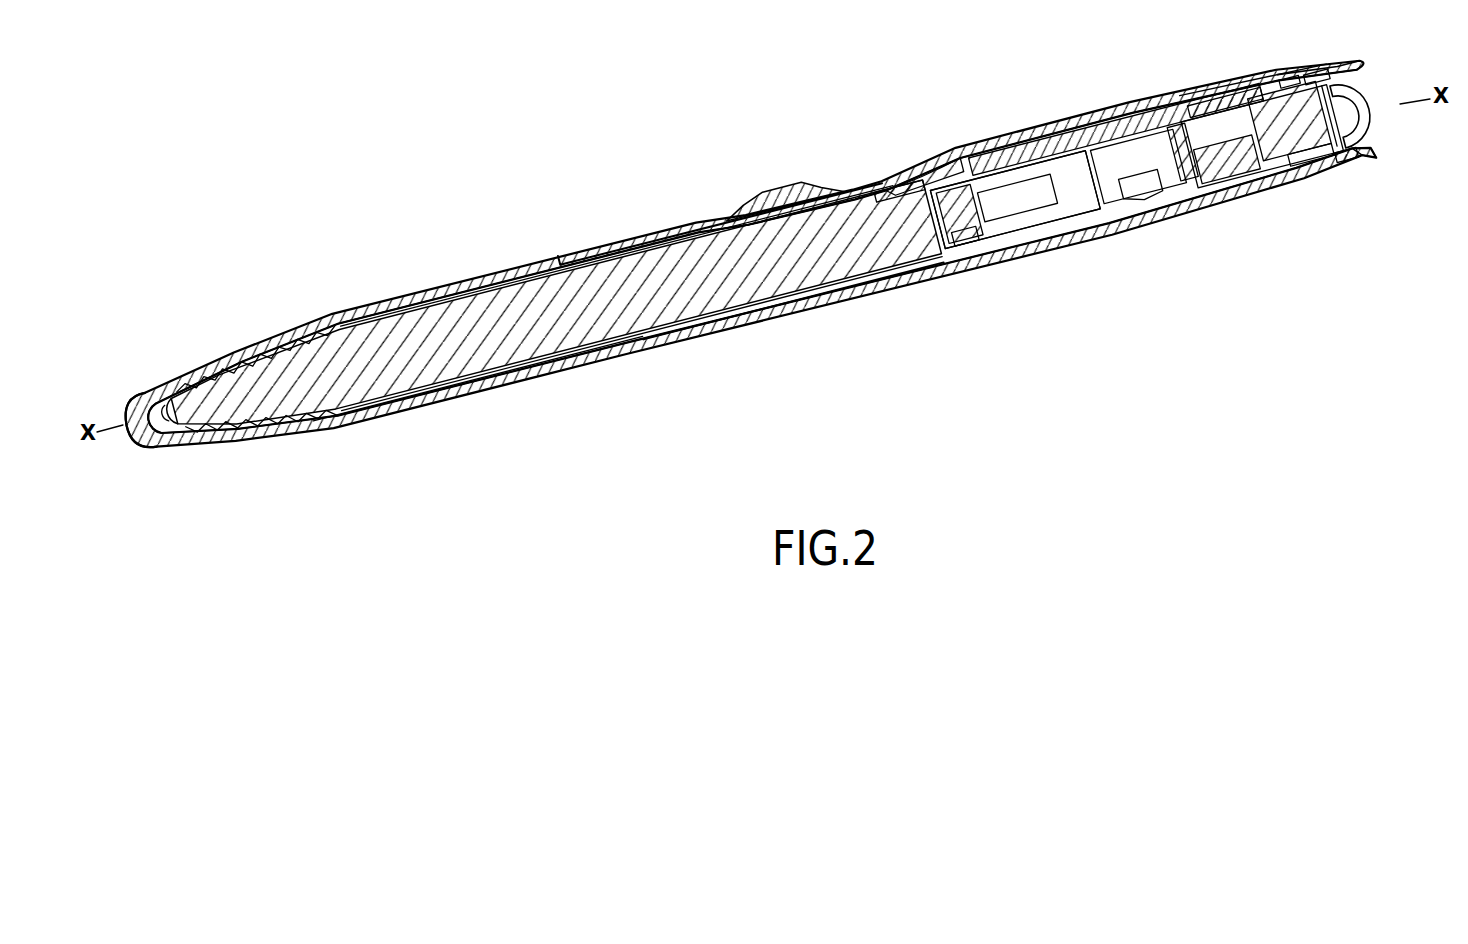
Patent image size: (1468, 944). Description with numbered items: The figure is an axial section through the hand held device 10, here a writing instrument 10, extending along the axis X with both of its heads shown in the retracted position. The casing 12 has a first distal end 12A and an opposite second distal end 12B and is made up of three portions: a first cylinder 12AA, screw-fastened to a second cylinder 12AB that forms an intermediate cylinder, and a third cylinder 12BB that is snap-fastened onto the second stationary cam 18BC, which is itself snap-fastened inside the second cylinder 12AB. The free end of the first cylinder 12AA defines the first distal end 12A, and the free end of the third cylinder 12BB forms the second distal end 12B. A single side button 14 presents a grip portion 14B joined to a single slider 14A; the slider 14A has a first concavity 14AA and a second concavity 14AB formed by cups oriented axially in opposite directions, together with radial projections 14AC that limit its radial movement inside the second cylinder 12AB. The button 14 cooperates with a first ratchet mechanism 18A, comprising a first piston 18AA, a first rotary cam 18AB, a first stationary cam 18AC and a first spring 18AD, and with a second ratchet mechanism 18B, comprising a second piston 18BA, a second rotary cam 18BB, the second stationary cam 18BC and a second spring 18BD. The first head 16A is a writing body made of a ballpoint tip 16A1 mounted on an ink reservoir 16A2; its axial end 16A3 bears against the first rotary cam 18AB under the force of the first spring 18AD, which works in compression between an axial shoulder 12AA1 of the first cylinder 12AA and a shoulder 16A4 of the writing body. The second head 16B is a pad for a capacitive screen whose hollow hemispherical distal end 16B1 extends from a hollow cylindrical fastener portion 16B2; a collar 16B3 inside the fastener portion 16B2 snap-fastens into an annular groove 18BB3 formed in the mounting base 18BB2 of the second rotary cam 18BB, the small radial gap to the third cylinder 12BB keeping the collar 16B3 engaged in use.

The hand held device 10 is at (524, 124).
The casing 12 is at (580, 257).
The first distal end 12A is at (137, 393).
The first cylinder 12AA is at (380, 307).
The axial shoulder 12AA1 is at (187, 380).
The second cylinder 12AB is at (953, 132).
The second distal end 12B is at (1360, 70).
The third cylinder 12BB is at (1287, 80).
The side button 14 is at (764, 180).
The slider 14A is at (1085, 150).
The first concavity 14AA is at (1087, 222).
The second concavity 14AB is at (1133, 217).
The radial projections 14AC is at (1100, 220).
The grip portion 14B is at (828, 190).
The first head 16A is at (442, 334).
The ballpoint tip 16A1 is at (167, 443).
The ink reservoir 16A2 is at (500, 330).
The axial end 16A3 is at (905, 180).
The shoulder 16A4 is at (305, 336).
The second head 16B is at (1372, 122).
The distal end 16B1 is at (1364, 93).
The fastener portion 16B2 is at (1317, 80).
The collar 16B3 is at (1243, 100).
The first ratchet mechanism 18A is at (1040, 300).
The first piston 18AA is at (1017, 248).
The first rotary cam 18AB is at (967, 243).
The first stationary cam 18AC is at (905, 262).
The first spring 18AD is at (320, 420).
The second ratchet mechanism 18B is at (1435, 197).
The second piston 18BA is at (1193, 203).
The second rotary cam 18BB is at (1250, 190).
The mounting base 18BB2 is at (1177, 117).
The annular groove 18BB3 is at (1363, 140).
The second stationary cam 18BC is at (1300, 180).
The second spring 18BD is at (1362, 173).